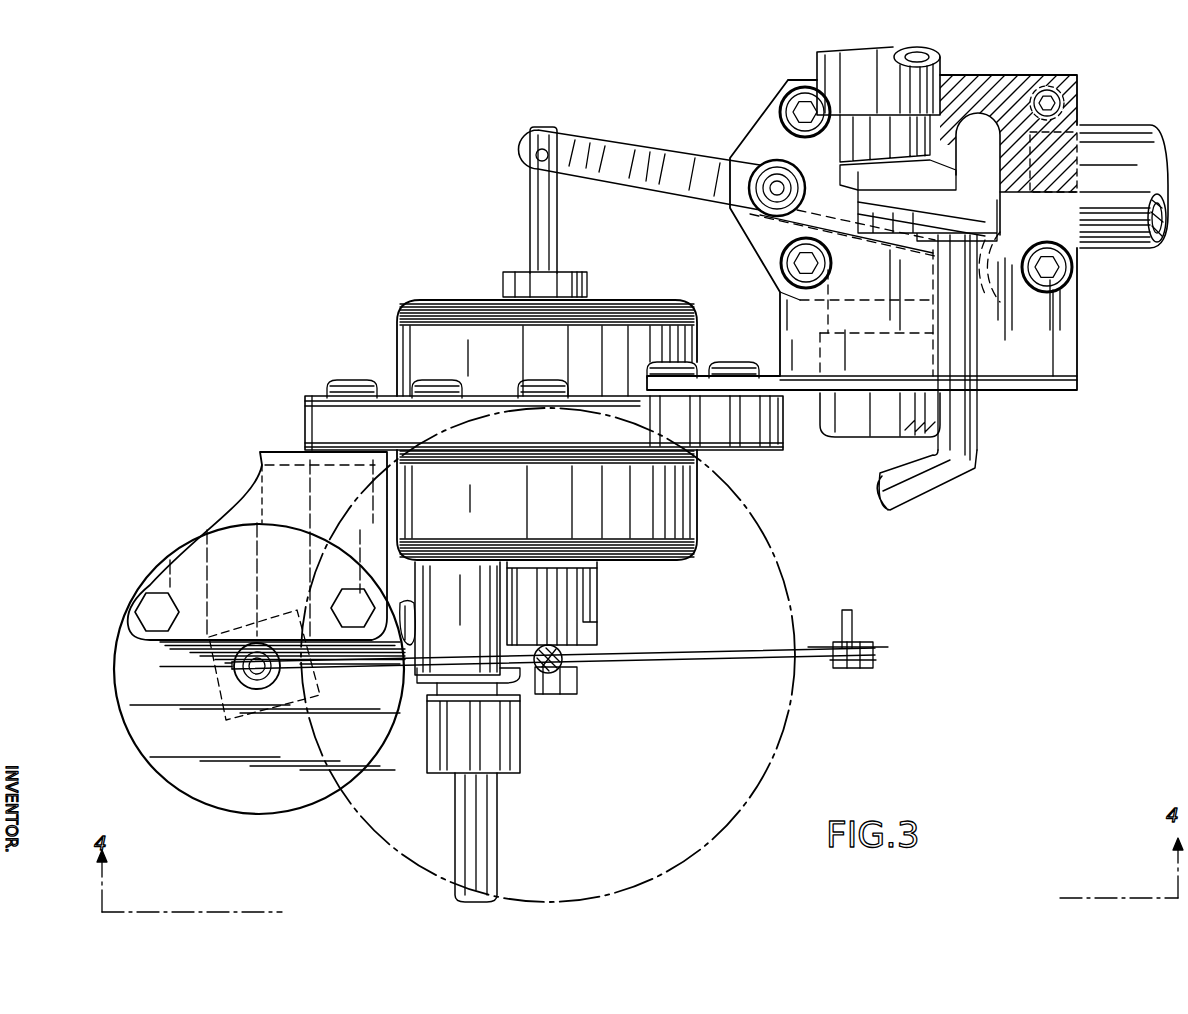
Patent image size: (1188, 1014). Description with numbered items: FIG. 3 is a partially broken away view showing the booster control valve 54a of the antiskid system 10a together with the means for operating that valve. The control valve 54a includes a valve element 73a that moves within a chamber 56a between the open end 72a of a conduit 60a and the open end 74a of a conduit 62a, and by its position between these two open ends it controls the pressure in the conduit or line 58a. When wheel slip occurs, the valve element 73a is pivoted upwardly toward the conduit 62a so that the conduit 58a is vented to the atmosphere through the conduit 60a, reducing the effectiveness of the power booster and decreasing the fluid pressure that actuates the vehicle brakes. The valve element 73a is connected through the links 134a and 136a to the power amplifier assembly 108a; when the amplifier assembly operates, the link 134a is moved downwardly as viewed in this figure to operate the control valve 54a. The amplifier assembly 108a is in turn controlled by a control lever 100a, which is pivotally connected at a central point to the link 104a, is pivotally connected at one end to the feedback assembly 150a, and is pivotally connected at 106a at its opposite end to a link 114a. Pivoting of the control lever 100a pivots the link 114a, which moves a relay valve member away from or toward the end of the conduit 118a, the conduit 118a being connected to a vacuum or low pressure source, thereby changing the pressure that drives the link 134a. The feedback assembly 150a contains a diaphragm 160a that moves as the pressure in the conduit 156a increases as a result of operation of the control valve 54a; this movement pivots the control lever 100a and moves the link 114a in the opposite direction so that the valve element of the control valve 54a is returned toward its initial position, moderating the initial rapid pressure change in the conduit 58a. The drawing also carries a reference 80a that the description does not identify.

The antiskid system 10a is at (300, 368).
The booster control valve 54a is at (1082, 96).
The chamber 56a is at (975, 128).
The conduit 58a is at (1105, 250).
The conduit 60a is at (823, 432).
The conduit 62a is at (870, 58).
The open end 72a is at (906, 216).
The valve element 73a is at (866, 199).
The open end 74a is at (905, 161).
The pivot circle 80a is at (782, 549).
The control lever 100a is at (386, 668).
The link 104a is at (570, 653).
The pivot connection 106a is at (843, 662).
The power amplifier assembly 108a is at (403, 314).
The link 114a is at (736, 652).
The conduit 118a is at (497, 826).
The link 134a is at (553, 238).
The link 136a is at (719, 160).
The feedback assembly 150a is at (215, 806).
The conduit 156a is at (880, 491).
The diaphragm 160a is at (244, 681).